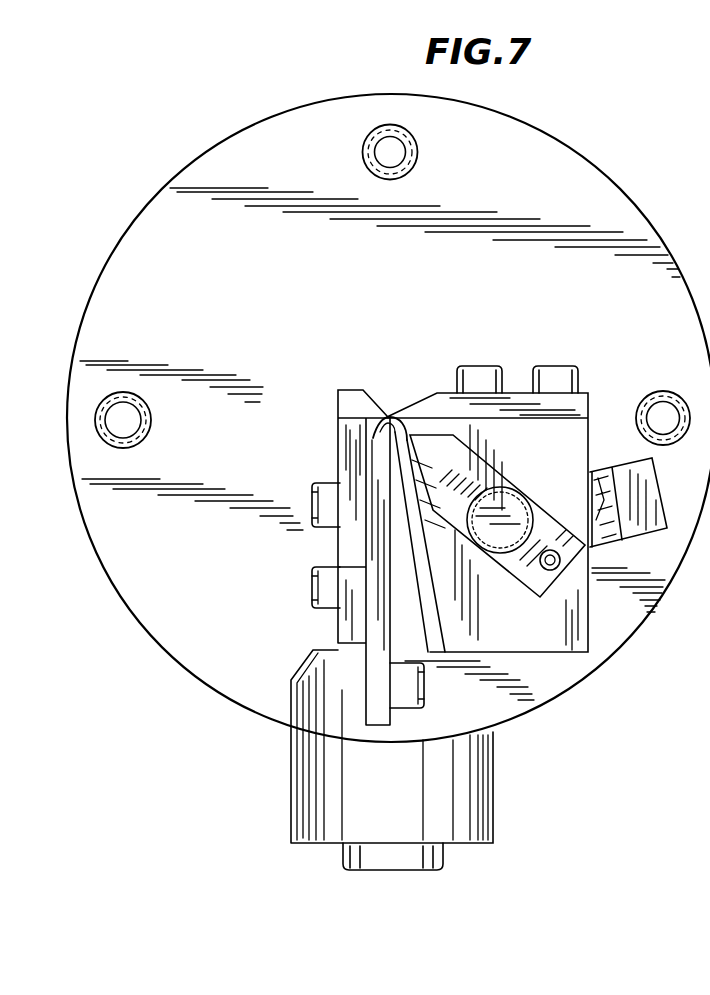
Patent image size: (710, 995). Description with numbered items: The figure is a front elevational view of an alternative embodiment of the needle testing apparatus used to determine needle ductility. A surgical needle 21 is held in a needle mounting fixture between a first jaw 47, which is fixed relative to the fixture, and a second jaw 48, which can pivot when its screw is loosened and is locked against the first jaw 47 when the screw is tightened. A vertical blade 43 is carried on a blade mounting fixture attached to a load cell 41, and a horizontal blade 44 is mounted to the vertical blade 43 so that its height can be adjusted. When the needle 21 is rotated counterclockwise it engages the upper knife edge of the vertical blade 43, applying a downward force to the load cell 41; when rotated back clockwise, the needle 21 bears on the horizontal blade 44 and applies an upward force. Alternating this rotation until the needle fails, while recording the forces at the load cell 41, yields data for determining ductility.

The needle 21 is at (389, 416).
The load cell 41 is at (397, 802).
The vertical blade 43 is at (378, 457).
The horizontal blade 44 is at (337, 397).
The first jaw 47 is at (435, 602).
The second jaw 48 is at (497, 516).